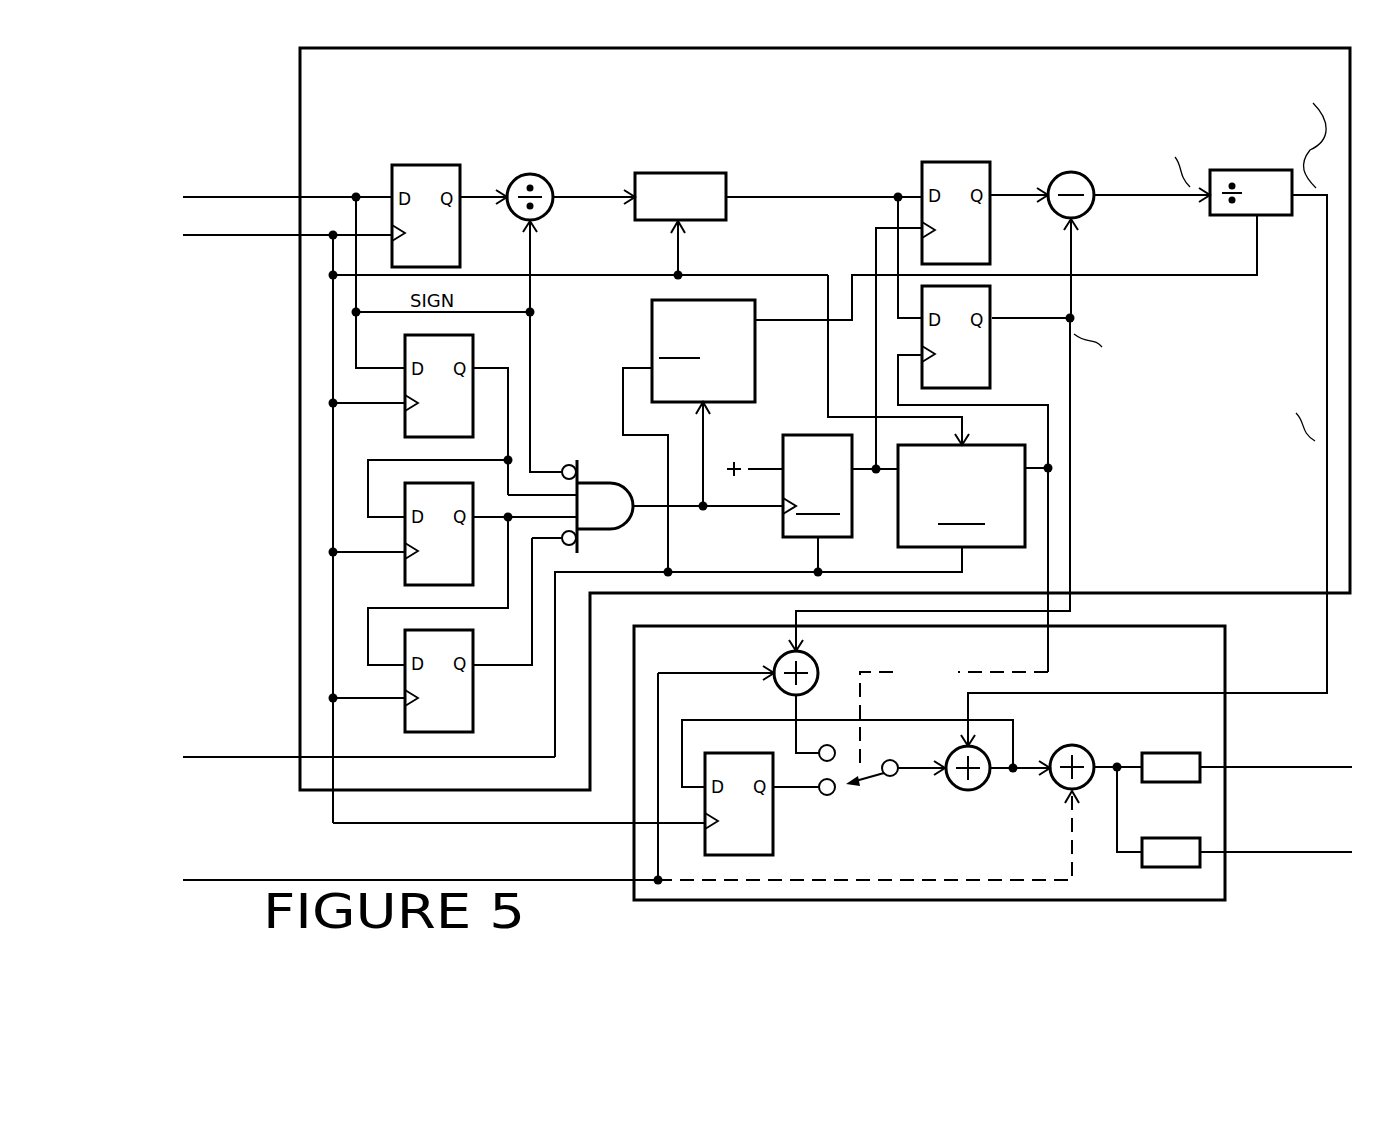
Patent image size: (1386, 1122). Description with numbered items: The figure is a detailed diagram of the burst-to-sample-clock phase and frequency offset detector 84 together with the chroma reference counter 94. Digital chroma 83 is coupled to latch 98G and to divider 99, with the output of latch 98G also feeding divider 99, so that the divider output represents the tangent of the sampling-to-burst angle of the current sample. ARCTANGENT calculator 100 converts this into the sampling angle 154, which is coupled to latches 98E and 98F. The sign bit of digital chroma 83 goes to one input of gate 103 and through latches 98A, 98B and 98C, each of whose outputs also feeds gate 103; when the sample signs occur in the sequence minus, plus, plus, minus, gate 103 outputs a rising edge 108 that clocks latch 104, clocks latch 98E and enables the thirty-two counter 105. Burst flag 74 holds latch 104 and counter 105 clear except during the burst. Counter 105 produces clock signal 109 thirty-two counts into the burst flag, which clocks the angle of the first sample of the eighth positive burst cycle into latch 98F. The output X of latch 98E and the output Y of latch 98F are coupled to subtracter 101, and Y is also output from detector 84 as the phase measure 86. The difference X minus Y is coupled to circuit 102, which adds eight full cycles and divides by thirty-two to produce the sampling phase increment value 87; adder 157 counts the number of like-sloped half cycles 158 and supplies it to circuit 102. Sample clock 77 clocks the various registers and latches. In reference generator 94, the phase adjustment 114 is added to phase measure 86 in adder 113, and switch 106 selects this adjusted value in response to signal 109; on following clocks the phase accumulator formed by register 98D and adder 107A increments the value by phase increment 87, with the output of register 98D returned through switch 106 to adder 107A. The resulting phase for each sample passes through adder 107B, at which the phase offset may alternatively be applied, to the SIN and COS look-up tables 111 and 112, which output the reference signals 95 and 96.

The burst to sample clock phase and frequency offset detector 84 is at (865, 89).
The chroma reference counter 94 is at (1165, 664).
The digital chroma 83 is at (352, 192).
The sample clock 77 is at (241, 247).
The latch 98G is at (414, 160).
The divider 99 is at (524, 172).
The arctangent calculator 100 is at (666, 170).
The sampling angle 154 is at (791, 193).
The latch 98E is at (948, 155).
The rising edge 108 is at (866, 248).
The subtracter 101 is at (1090, 213).
The divide-by-32 circuit 102 is at (1275, 220).
The number of like sloped half cycles 158 is at (1214, 277).
The latch 98F is at (996, 332).
The 32 counter output clock signal 109 is at (1024, 402).
The 32 counter 105 is at (990, 446).
The latch 104 is at (808, 430).
The gate 103 is at (600, 472).
The adder 157 is at (646, 326).
The latch 98A is at (398, 420).
The latch 98B is at (398, 566).
The latch 98C is at (483, 681).
The burst flag 74 is at (258, 762).
The phase adjustment 114 is at (581, 876).
The phase measure 86 is at (1078, 519).
The phase increment value 87 is at (1318, 521).
The adder 113 is at (822, 657).
The register 98D is at (778, 812).
The switch 106 is at (872, 784).
The adder 107A is at (981, 792).
The adder 107B is at (1088, 746).
The SIN look up table 111 is at (1174, 748).
The COS look up table 112 is at (1164, 834).
The reference output SIN 95 is at (1264, 772).
The reference output COS 96 is at (1264, 857).